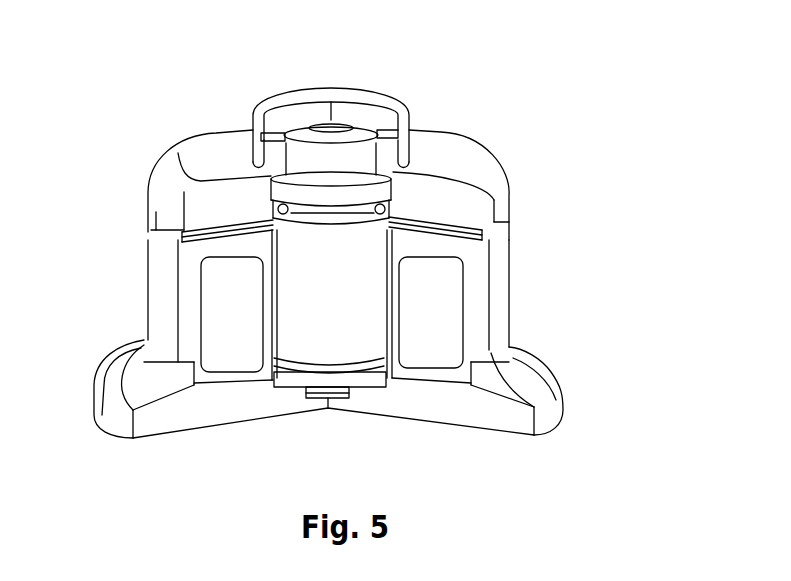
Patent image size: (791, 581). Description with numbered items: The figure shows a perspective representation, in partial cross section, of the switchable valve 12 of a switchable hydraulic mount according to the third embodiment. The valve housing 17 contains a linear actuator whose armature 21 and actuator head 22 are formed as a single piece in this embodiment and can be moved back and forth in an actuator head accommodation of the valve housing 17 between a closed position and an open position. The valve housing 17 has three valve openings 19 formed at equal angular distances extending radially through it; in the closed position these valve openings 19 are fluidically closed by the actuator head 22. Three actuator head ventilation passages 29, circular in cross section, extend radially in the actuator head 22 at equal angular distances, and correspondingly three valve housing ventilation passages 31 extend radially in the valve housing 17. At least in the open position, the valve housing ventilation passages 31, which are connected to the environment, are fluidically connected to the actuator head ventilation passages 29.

The switchable valve 12 is at (140, 88).
The valve housing 17 is at (457, 198).
The valve opening 19 is at (390, 128).
The armature 21 is at (358, 307).
The actuator head 22 is at (454, 338).
The actuator head ventilation passage 29 is at (372, 222).
The valve housing ventilation passage 31 is at (430, 220).